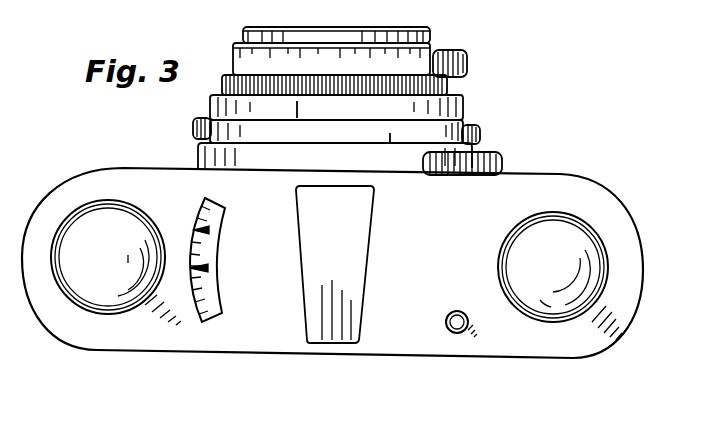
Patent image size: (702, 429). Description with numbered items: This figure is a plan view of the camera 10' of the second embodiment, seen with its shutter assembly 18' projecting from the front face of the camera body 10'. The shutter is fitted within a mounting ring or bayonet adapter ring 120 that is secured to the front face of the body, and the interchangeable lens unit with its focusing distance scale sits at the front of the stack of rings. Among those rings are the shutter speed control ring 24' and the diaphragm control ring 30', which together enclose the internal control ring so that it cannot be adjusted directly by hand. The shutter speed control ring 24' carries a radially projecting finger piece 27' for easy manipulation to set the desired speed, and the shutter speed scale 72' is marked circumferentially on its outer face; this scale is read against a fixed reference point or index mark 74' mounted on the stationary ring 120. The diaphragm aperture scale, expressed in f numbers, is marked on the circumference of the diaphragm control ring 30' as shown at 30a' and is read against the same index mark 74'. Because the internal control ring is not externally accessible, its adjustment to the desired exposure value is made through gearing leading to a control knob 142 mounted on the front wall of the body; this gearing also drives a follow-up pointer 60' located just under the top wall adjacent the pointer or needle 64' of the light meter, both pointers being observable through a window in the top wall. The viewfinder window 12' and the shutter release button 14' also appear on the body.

The camera 10' is at (332, 260).
The viewfinder window 12' is at (553, 284).
The shutter release button 14' is at (458, 308).
The shutter assembly 18' is at (176, 131).
The shutter speed control ring 24' is at (320, 122).
The finger piece 27' is at (488, 135).
The diaphragm control ring 30' is at (354, 108).
The diaphragm aperture scale 30a' is at (276, 153).
The follow-up pointer 60' is at (225, 260).
The light meter pointer 64' is at (226, 275).
The shutter speed scale 72' is at (408, 170).
The index mark 74' is at (335, 245).
The bayonet adapter ring 120 is at (200, 151).
The control knob 142 is at (500, 165).